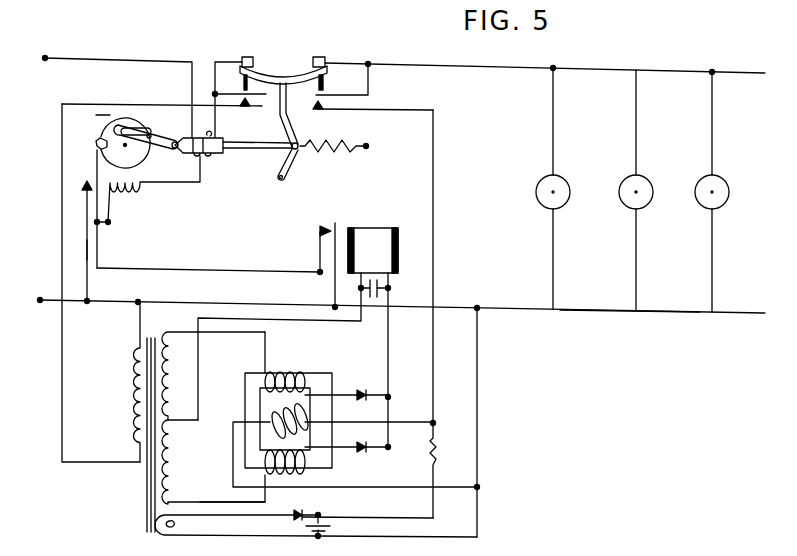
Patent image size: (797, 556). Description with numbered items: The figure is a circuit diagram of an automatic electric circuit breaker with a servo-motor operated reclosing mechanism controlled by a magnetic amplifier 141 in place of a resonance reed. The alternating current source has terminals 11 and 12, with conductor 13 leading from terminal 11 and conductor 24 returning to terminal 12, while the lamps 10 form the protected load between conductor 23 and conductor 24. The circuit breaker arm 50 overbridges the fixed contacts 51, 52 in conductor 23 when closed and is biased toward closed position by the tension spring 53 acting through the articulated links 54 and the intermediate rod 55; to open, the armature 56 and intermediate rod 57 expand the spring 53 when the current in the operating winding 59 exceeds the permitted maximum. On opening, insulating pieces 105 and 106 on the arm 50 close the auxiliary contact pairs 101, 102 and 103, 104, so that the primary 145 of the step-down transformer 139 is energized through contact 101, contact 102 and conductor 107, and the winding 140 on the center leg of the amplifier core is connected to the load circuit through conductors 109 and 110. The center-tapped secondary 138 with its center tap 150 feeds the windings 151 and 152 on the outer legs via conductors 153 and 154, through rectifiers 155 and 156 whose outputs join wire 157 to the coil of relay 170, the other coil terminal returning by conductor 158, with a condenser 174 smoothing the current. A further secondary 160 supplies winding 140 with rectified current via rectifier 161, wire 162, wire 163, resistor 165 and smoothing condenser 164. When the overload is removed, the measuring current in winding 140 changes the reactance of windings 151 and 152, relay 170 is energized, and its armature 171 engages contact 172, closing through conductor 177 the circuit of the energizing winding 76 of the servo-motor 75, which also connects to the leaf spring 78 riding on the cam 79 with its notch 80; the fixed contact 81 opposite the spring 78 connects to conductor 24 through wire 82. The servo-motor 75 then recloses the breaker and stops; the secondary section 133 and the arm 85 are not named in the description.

The lamps 10 is at (560, 177).
The terminal 11 is at (50, 52).
The terminal 12 is at (41, 298).
The conductor 13 is at (122, 58).
The conductor 23 is at (596, 64).
The conductor 24 is at (614, 312).
The circuit breaker arm 50 is at (283, 76).
The fixed contact 51 is at (250, 53).
The fixed contact 52 is at (322, 53).
The tension spring 53 is at (339, 138).
The articulated links 54 is at (290, 169).
The intermediate rod 55 is at (280, 108).
The armature 56 is at (210, 156).
The intermediate rod 57 is at (256, 150).
The operating winding 59 is at (207, 132).
The servo-motor 75 is at (101, 108).
The energizing winding 76 is at (133, 193).
The leaf spring 78 is at (95, 163).
The cam 79 is at (143, 156).
The notch 80 is at (99, 136).
The fixed contact 81 is at (82, 188).
The wire 82 is at (86, 254).
The switch arm 85 is at (147, 126).
The contact member 101 is at (266, 94).
The contact member 102 is at (250, 108).
The contact member 103 is at (316, 95).
The contact member 104 is at (317, 110).
The insulating piece 105 is at (244, 84).
The insulating piece 106 is at (323, 84).
The conductor 107 is at (62, 205).
The conductor 109 is at (434, 190).
The conductor 110 is at (478, 420).
The secondary winding section 133 is at (170, 380).
The secondary 138 is at (171, 460).
The step-down transformer 139 is at (151, 534).
The winding 140 is at (260, 402).
The magnetic amplifier 141 is at (294, 408).
The primary 145 is at (136, 398).
The center tap 150 is at (172, 422).
The winding 151 is at (299, 371).
The winding 152 is at (285, 478).
The conductor 153 is at (221, 333).
The conductor 154 is at (215, 499).
The rectifier 155 is at (368, 386).
The rectifier 156 is at (356, 456).
The wire 157 is at (389, 363).
The conductor 158 is at (286, 321).
The secondary 160 is at (176, 528).
The rectifier 161 is at (302, 510).
The wire 162 is at (375, 538).
The wire 163 is at (404, 517).
The condenser 164 is at (332, 527).
The resistor 165 is at (436, 455).
The relay 170 is at (380, 230).
The armature 171 is at (318, 232).
The contact 172 is at (336, 226).
The condenser 174 is at (375, 296).
The conductor 177 is at (228, 270).